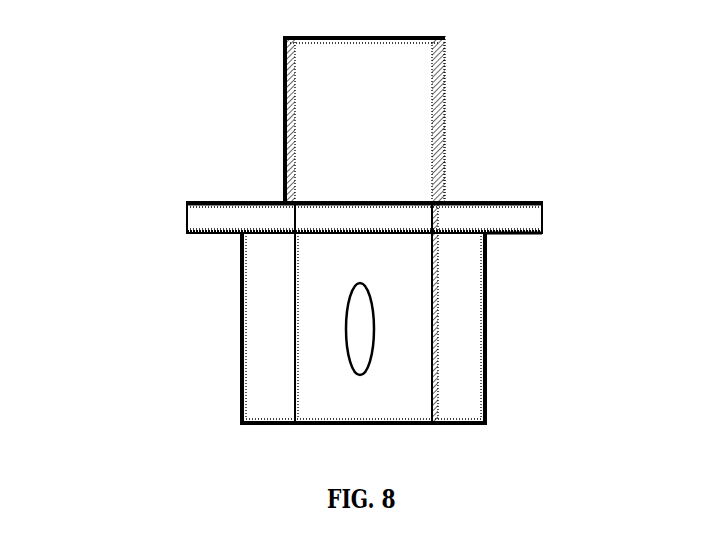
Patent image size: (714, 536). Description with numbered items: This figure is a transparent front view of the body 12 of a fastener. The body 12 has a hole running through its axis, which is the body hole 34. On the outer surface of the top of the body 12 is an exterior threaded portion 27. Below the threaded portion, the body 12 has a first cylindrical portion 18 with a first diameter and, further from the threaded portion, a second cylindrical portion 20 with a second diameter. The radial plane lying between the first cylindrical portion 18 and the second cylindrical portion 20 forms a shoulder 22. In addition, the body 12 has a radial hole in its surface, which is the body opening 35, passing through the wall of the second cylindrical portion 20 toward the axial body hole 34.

The body 12 is at (216, 72).
The exterior threaded portion 27 is at (451, 131).
The first cylindrical portion 18 is at (169, 217).
The shoulder 22 is at (511, 247).
The second cylindrical portion 20 is at (222, 349).
The body hole 34 is at (445, 369).
The body opening 35 is at (337, 369).